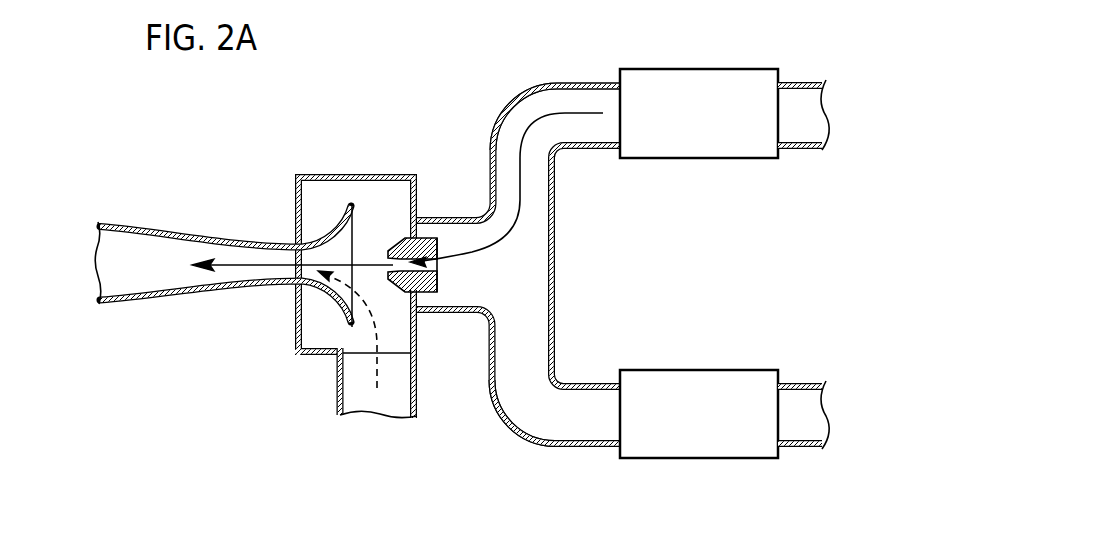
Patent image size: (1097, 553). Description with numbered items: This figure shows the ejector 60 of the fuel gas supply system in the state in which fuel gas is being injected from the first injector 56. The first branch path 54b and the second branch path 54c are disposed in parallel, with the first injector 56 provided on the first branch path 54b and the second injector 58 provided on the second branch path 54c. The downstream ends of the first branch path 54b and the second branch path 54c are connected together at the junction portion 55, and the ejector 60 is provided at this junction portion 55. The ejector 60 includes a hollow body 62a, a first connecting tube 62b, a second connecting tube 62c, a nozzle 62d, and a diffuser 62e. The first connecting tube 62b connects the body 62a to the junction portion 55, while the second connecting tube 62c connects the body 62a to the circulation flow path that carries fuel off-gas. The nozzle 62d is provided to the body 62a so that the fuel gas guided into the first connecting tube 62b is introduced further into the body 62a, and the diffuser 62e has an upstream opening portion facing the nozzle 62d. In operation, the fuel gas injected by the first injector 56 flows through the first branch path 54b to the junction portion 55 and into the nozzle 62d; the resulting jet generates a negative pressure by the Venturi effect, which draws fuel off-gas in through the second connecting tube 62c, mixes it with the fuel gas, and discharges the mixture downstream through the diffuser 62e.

The ejector 60 is at (296, 140).
The body 62a is at (341, 174).
The first connecting tube 62b is at (446, 314).
The second connecting tube 62c is at (337, 395).
The nozzle 62d is at (428, 236).
The diffuser 62e is at (167, 234).
The first branch path 54b is at (589, 82).
The second branch path 54c is at (590, 447).
The junction portion 55 is at (555, 262).
The first injector 56 is at (657, 68).
The second injector 58 is at (659, 460).